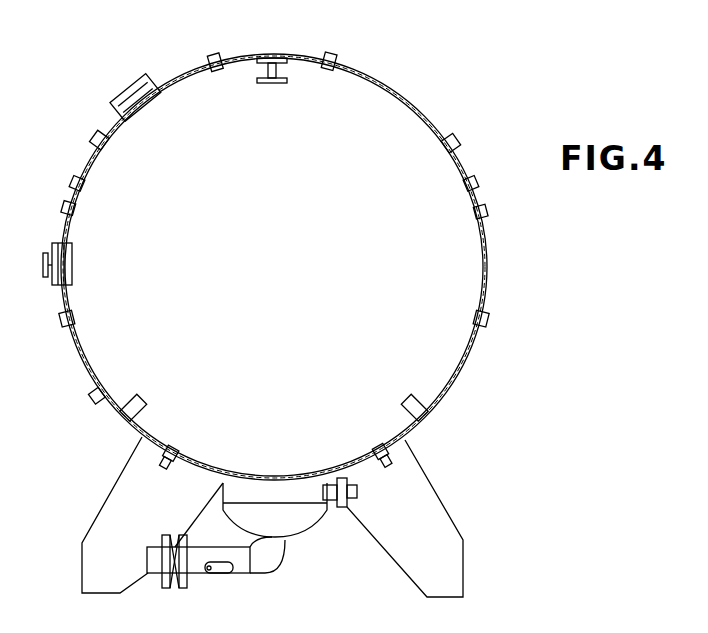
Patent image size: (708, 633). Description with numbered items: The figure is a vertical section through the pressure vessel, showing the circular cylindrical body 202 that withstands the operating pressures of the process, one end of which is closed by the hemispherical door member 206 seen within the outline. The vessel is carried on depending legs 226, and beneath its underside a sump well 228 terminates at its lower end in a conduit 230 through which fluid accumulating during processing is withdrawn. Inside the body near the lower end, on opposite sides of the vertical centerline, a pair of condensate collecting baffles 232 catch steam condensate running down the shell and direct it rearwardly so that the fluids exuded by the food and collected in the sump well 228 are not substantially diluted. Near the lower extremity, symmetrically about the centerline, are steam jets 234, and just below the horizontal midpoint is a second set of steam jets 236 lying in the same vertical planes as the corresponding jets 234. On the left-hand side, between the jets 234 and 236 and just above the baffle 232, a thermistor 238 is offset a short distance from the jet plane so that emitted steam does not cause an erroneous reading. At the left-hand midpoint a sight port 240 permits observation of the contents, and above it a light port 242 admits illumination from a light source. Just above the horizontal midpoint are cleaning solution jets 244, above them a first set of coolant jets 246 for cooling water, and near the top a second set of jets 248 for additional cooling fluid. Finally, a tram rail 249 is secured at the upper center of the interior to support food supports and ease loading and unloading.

The cylindrical body 202 is at (487, 266).
The hemispherical door member 206 is at (303, 255).
The depending legs 226 is at (105, 520).
The sump well 228 is at (308, 527).
The conduit 230 is at (262, 565).
The condensate collecting baffles 232 is at (148, 400).
The steam jets 234 is at (172, 462).
The second set of steam jets 236 is at (80, 322).
The thermistor 238 is at (112, 388).
The sight port 240 is at (55, 245).
The light port 242 is at (140, 82).
The cleaning solution jets 244 is at (68, 200).
The first set of coolant jets 246 is at (100, 133).
The second set of jets 248 is at (215, 50).
The tram rail 249 is at (278, 85).